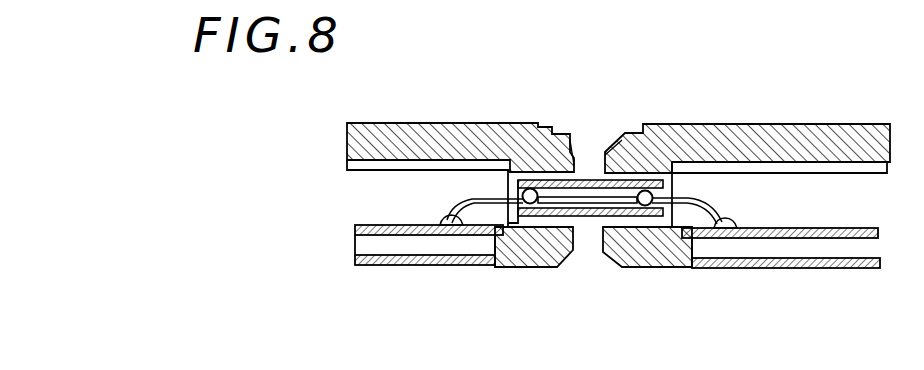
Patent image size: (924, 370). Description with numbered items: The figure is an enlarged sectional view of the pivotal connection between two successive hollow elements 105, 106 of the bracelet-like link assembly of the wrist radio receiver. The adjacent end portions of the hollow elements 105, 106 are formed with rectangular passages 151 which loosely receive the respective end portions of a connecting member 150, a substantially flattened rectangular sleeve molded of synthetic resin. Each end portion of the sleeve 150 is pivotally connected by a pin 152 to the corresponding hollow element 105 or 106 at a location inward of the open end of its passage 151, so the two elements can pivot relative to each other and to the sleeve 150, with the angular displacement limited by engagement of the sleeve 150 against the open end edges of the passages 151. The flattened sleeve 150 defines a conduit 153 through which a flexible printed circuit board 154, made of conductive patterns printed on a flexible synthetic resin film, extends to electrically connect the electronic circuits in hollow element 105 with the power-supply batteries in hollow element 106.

The hollow element 105 is at (775, 130).
The hollow element 106 is at (432, 128).
The connecting member 150 is at (590, 180).
The passage 151 is at (581, 170).
The pin 152 is at (527, 203).
The conduit 153 is at (594, 204).
The flexible printed circuit board 154 is at (452, 205).